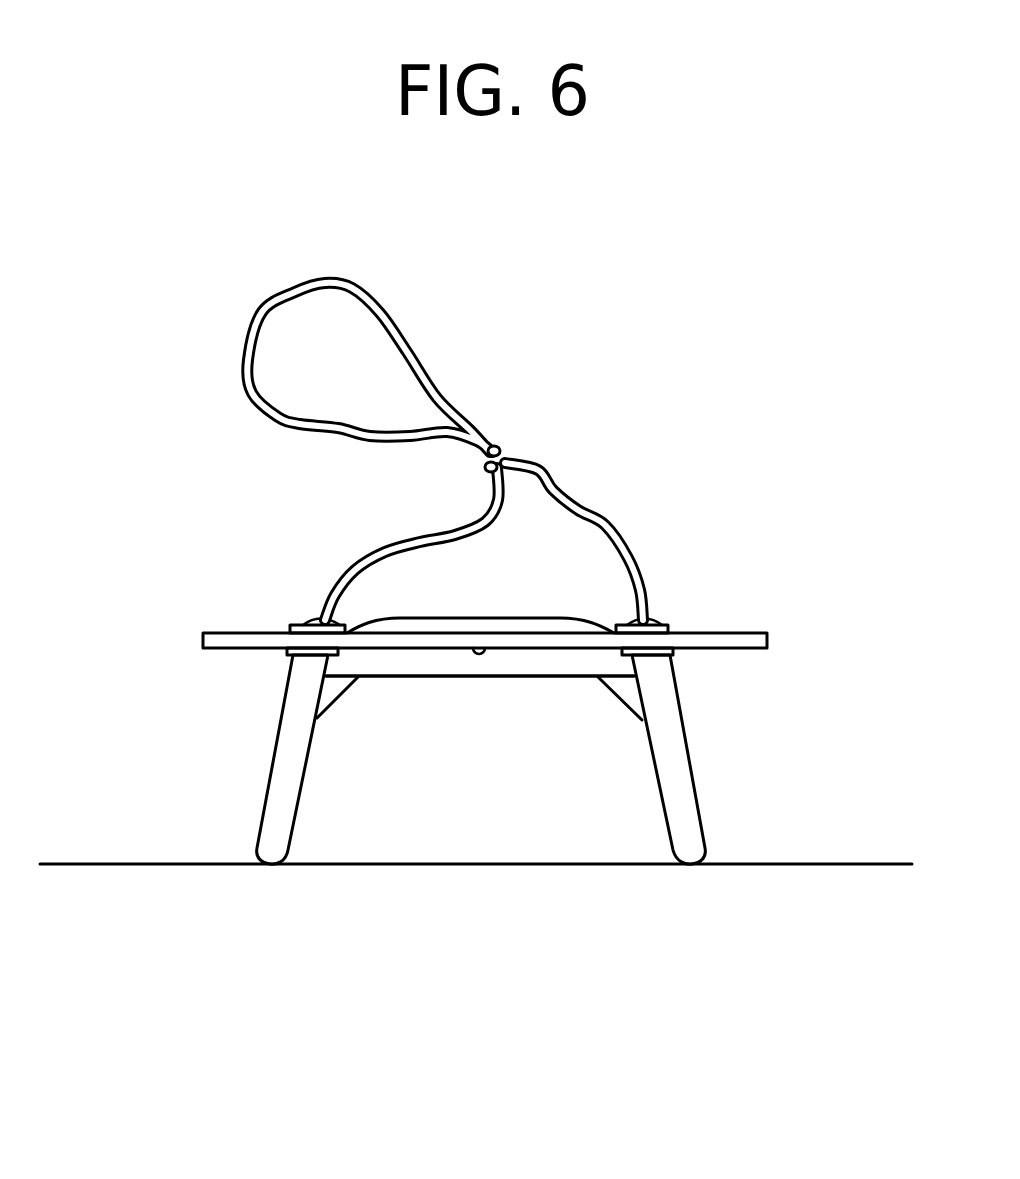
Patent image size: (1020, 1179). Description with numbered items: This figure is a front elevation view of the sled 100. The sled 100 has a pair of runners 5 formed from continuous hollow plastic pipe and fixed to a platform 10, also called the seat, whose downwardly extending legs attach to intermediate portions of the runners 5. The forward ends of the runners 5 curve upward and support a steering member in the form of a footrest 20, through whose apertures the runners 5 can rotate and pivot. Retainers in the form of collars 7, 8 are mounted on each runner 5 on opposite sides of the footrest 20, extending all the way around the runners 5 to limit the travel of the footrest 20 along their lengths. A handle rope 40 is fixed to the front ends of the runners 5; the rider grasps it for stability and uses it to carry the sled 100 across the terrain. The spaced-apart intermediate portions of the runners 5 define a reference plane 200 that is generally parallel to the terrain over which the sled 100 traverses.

The runners 5 is at (263, 800).
The collar 7 is at (290, 625).
The collar 8 is at (287, 651).
The platform 10 is at (460, 677).
The footrest 20 is at (758, 630).
The handle rope 40 is at (347, 282).
The sled 100 is at (683, 435).
The reference plane 200 is at (807, 866).